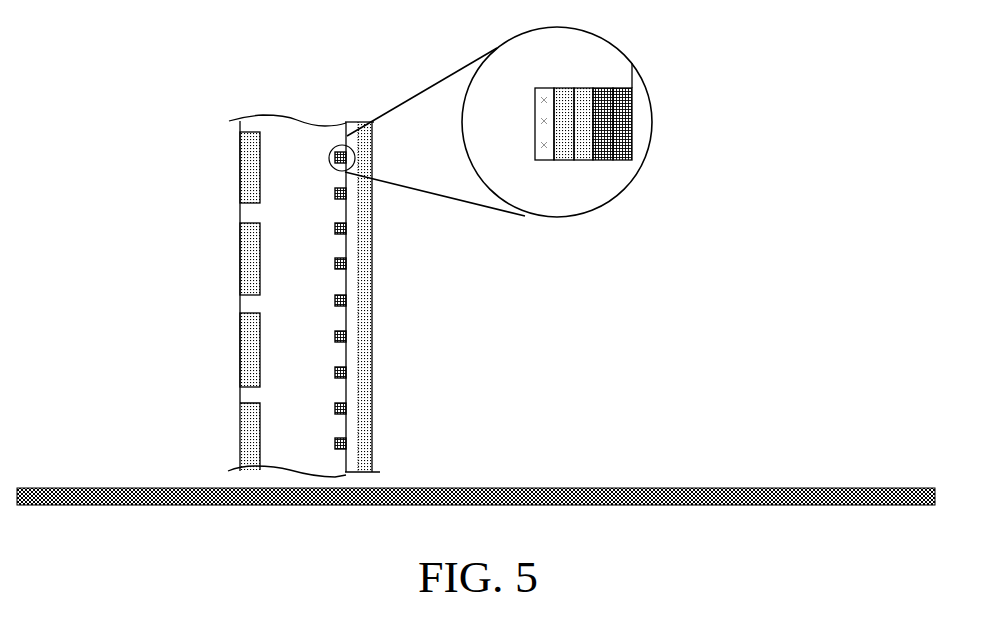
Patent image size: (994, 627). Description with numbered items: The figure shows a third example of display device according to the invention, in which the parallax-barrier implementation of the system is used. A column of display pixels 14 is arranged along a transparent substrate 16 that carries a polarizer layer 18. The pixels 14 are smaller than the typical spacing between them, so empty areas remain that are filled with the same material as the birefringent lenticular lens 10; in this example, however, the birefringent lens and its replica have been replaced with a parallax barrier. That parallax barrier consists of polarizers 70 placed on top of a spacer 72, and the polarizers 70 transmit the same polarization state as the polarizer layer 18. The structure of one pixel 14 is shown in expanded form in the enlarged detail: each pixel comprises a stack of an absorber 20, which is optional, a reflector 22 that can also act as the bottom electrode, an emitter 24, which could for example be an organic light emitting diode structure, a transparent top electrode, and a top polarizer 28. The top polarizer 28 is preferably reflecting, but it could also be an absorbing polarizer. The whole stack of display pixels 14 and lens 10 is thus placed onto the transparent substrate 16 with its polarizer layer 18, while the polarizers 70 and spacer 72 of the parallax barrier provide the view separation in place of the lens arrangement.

The birefringent lenticular lens 10 is at (603, 160).
The pixels 14 is at (372, 178).
The transparent substrate 16 is at (353, 425).
The polarizer layer 18 is at (370, 383).
The absorber 20 is at (623, 160).
The reflector 22 is at (583, 160).
The emitter 24 is at (564, 160).
The top polarizer 28 is at (545, 160).
The polarizers 70 is at (238, 140).
The spacer 72 is at (275, 131).